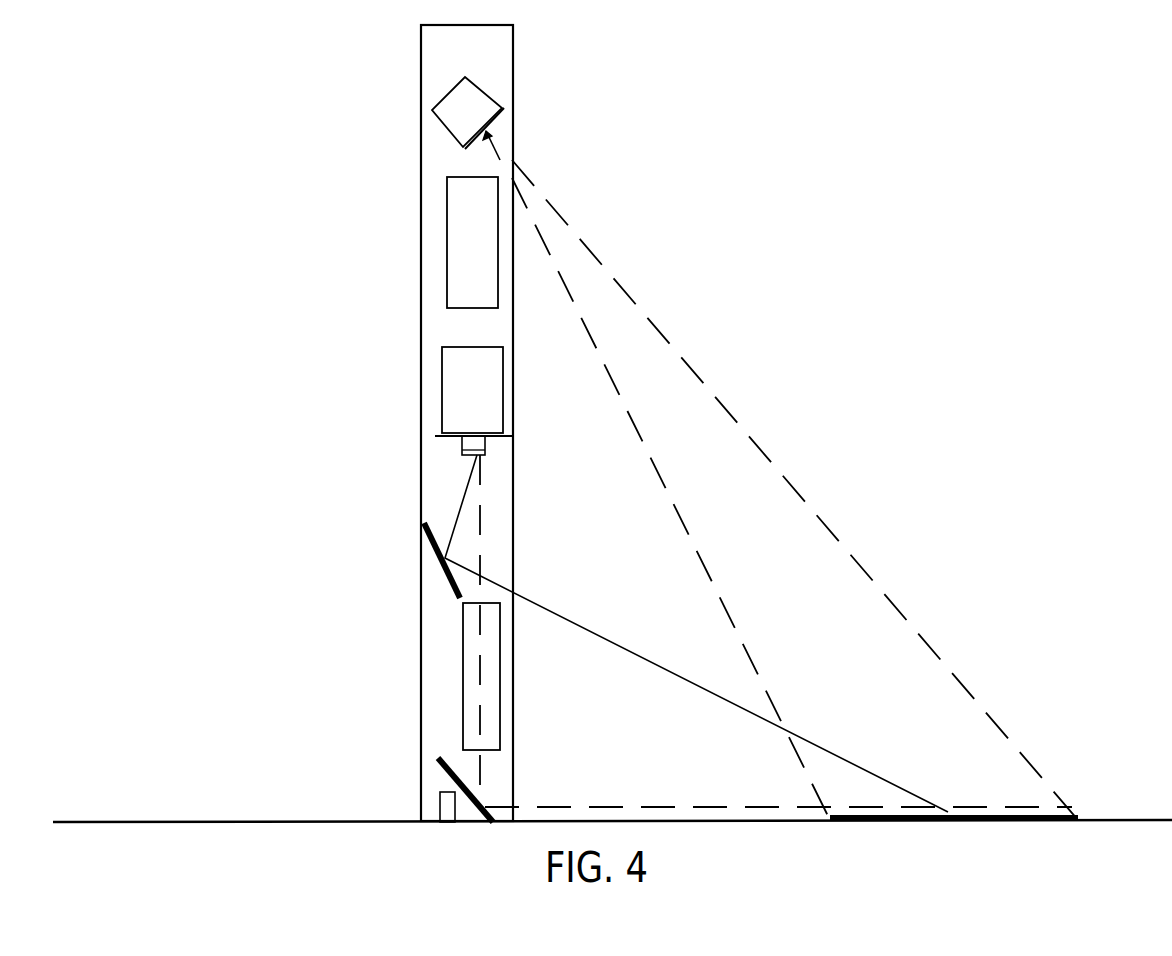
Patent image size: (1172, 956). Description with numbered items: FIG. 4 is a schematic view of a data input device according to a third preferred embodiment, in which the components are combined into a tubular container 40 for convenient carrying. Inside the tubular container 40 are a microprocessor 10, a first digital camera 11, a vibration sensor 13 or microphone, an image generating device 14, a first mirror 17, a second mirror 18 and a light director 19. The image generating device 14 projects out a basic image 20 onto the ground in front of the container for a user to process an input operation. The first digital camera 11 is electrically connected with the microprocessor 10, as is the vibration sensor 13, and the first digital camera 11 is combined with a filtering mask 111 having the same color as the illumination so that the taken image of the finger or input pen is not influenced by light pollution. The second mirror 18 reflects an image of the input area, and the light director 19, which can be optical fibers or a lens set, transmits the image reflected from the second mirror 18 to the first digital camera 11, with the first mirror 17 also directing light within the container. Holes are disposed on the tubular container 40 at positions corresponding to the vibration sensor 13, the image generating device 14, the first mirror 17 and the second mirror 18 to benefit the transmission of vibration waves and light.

The microprocessor 10 is at (458, 228).
The first digital camera 11 is at (456, 385).
The filtering mask 111 is at (461, 448).
The vibration sensor 13 is at (447, 813).
The image generating device 14 is at (482, 92).
The first mirror 17 is at (445, 580).
The second mirror 18 is at (439, 762).
The light director 19 is at (465, 693).
The basic image 20 is at (1050, 823).
The tubular container 40 is at (421, 415).